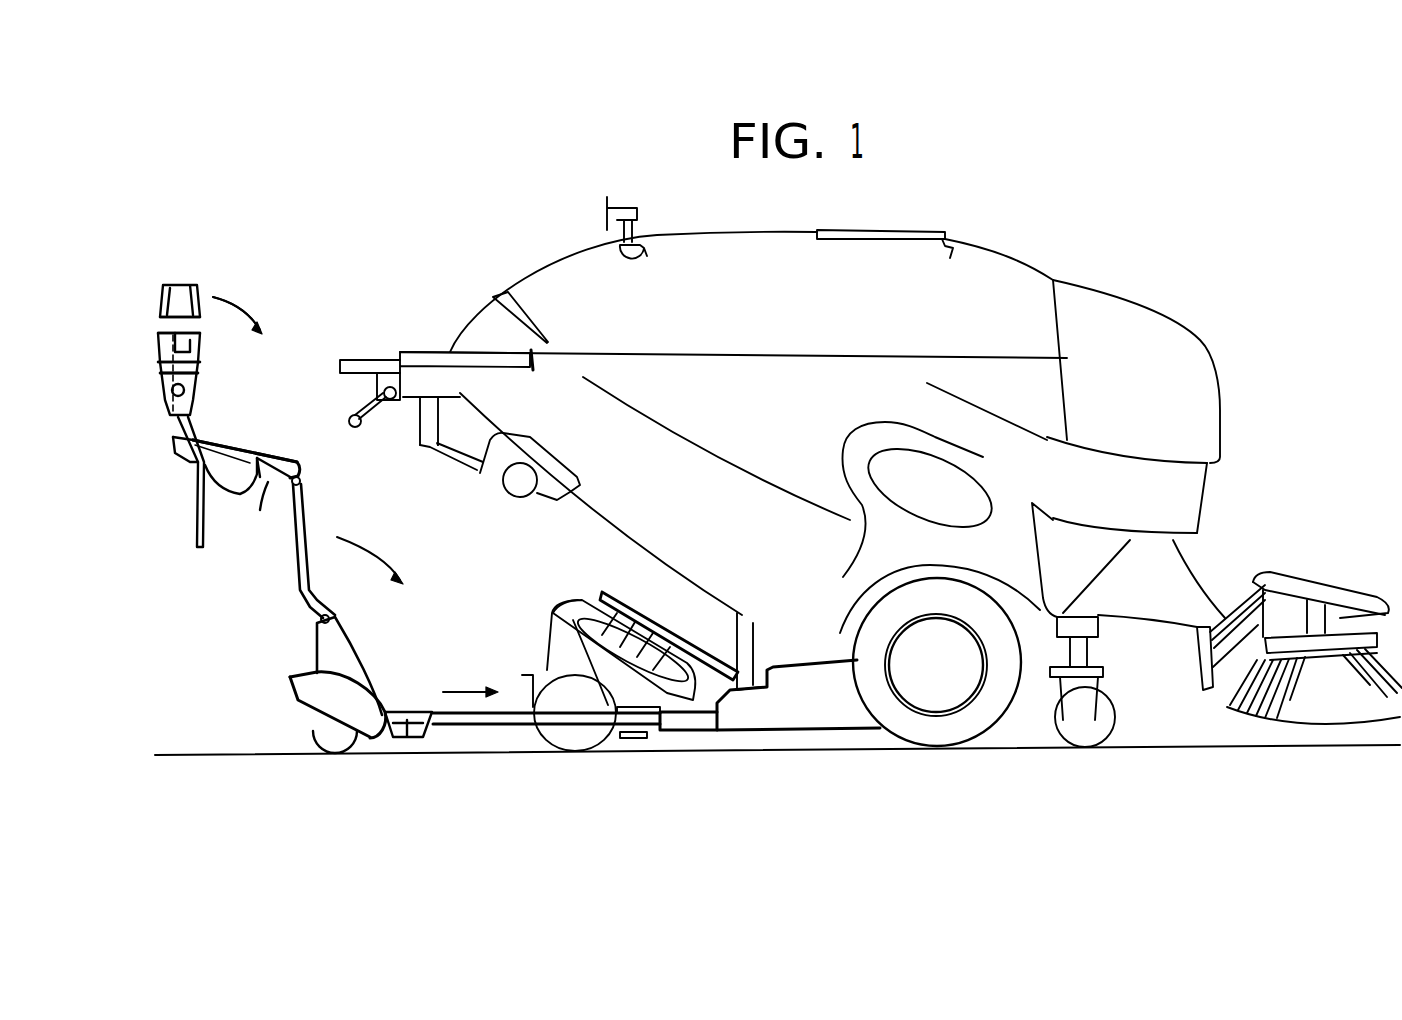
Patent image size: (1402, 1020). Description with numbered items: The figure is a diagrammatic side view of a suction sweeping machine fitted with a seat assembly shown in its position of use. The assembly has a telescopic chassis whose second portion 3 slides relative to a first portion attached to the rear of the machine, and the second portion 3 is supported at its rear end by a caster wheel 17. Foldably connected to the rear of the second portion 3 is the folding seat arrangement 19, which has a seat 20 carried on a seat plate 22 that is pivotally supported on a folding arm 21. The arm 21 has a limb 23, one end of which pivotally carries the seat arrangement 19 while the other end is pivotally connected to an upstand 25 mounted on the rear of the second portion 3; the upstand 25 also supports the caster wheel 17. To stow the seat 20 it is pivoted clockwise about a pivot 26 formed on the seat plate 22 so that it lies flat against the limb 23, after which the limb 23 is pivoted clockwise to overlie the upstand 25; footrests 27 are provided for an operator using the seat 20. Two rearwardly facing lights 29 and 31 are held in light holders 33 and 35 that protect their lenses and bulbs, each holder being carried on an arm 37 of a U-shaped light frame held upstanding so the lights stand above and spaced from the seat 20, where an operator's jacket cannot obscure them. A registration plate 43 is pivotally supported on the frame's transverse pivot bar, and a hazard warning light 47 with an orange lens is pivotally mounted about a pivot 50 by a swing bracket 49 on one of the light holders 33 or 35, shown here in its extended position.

The second portion 3 is at (513, 727).
The caster wheel 17 is at (332, 740).
The seat arrangement 19 is at (252, 411).
The seat 20 is at (262, 433).
The folding arm 21 is at (288, 546).
The seat plate 22 is at (244, 508).
The limb 23 is at (302, 538).
The upstand 25 is at (343, 660).
The pivot 26 is at (303, 481).
The footrests 27 is at (410, 733).
The rearwardly facing light 29 is at (203, 303).
The rearwardly facing light 31 is at (203, 303).
The light holder 33 is at (157, 357).
The light holder 35 is at (157, 357).
The arm 37 is at (193, 442).
The registration plate 43 is at (197, 500).
The hazard warning light 47 is at (173, 283).
The swing bracket 49 is at (160, 340).
The pivot 50 is at (172, 390).